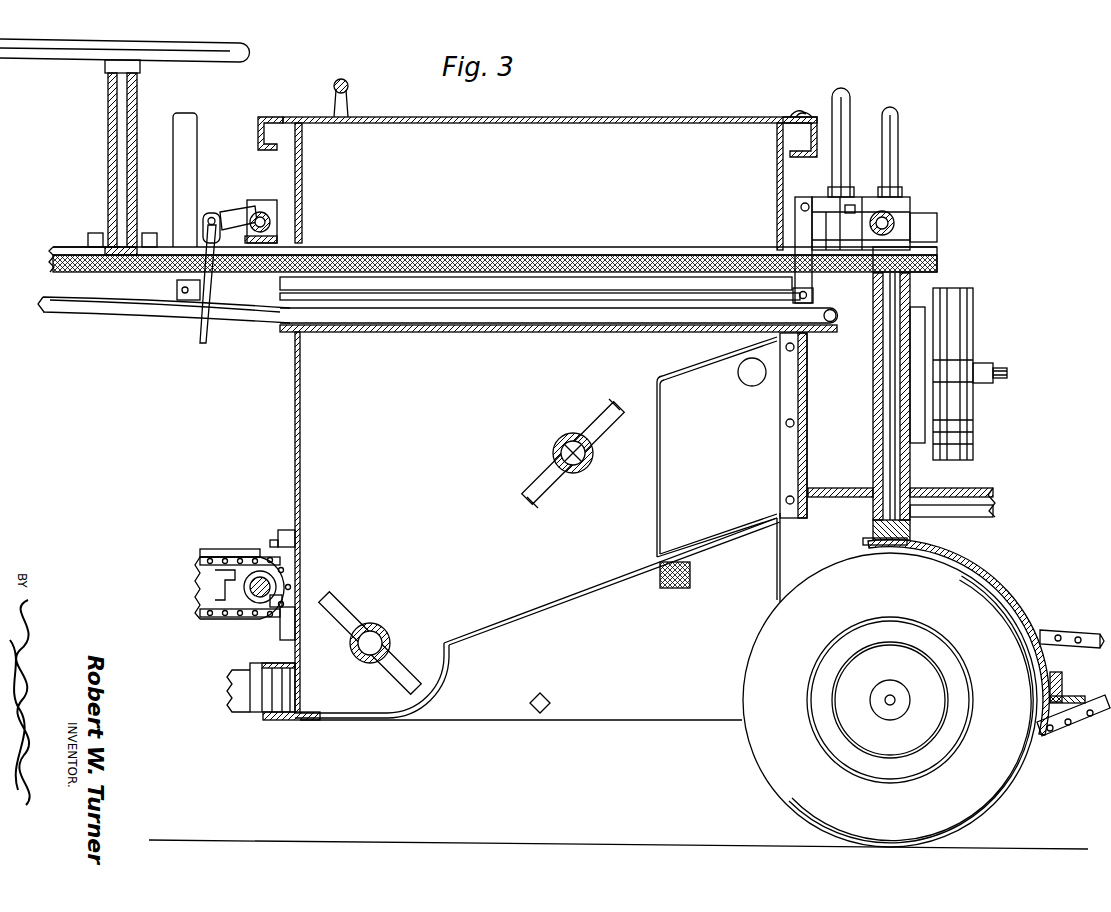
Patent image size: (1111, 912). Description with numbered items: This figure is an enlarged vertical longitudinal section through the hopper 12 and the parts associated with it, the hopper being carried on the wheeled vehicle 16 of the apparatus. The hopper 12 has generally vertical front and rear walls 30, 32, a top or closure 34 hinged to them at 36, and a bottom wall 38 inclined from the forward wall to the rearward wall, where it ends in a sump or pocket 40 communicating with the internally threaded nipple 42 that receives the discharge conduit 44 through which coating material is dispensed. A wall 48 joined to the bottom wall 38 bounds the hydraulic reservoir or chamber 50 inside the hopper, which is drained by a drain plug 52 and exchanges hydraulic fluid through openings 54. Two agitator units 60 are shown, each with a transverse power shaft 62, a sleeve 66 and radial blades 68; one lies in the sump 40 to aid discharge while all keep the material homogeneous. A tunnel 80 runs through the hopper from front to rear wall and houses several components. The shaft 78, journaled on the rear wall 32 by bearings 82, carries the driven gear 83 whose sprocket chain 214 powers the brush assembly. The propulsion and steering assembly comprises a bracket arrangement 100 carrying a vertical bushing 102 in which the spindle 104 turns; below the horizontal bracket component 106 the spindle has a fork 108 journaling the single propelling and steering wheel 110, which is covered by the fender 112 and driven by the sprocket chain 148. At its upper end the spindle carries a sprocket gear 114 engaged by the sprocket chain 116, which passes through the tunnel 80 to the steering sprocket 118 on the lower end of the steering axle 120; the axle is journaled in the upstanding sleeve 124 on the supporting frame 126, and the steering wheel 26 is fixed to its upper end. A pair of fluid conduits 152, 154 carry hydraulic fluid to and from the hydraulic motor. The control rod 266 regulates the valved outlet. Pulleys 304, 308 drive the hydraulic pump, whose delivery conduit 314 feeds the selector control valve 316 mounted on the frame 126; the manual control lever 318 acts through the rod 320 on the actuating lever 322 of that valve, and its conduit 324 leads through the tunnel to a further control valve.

The hopper 12 is at (288, 380).
The wheel 16 is at (1031, 581).
The steering wheel 26 is at (50, 57).
The front wall 30 is at (777, 166).
The rear wall 32 is at (300, 223).
The top or closure 34 is at (483, 124).
The hinge 36 is at (808, 116).
The bottom wall 38 is at (618, 588).
The sump or pocket 40 is at (403, 700).
The internally threaded nipple 42 is at (286, 713).
The discharge conduit 44 is at (255, 702).
The wall 48 is at (660, 444).
The hydraulic reservoir or chamber 50 is at (656, 481).
The drain plug 52 is at (674, 588).
The openings 54 is at (750, 381).
The agitator unit 60 is at (589, 414).
The power shaft 62 is at (355, 599).
The sleeve 66 is at (566, 442).
The blades 68 is at (540, 484).
The shaft 78 is at (262, 592).
The tunnel or conduit 80 is at (456, 247).
The bearings 82 is at (288, 530).
The driven gear 83 is at (252, 575).
The supporting bracket arrangement 100 is at (808, 402).
The vertical bushing 102 is at (878, 404).
The vertical spindle 104 is at (888, 473).
The horizontal bracket component 106 is at (826, 486).
The fork 108 is at (907, 529).
The propelling and steering wheel 110 is at (1003, 752).
The wheel fender or shield 112 is at (986, 573).
The sprocket gear 114 is at (940, 264).
The sprocket chain 116 is at (548, 265).
The steering sprocket 118 is at (438, 301).
The steering axle 120 is at (122, 122).
The upstanding sleeve 124 is at (112, 160).
The supporting frame 126 is at (66, 243).
The sprocket chain 148 is at (1068, 632).
The fluid conduit 152 is at (895, 140).
The fluid conduit 154 is at (840, 124).
The sprocket chain 214 is at (212, 550).
The control rod 266 is at (200, 328).
The pulley 304 is at (972, 368).
The pulley 308 is at (973, 308).
The delivery conduit 314 is at (895, 223).
The control valve 316 is at (919, 189).
The manual control lever 318 is at (183, 157).
The rod 320 is at (470, 290).
The actuating lever 322 is at (803, 222).
The conduit 324 is at (390, 326).